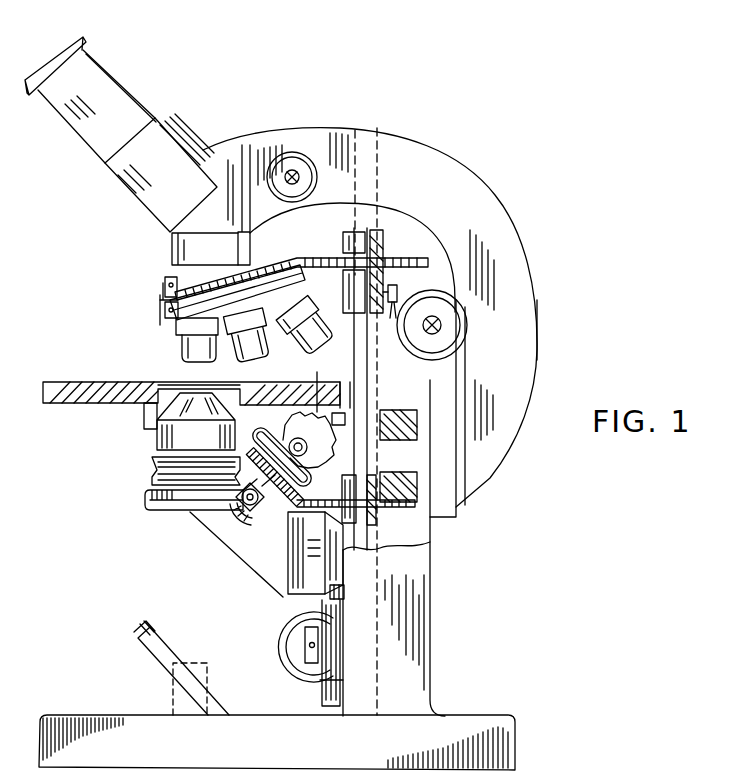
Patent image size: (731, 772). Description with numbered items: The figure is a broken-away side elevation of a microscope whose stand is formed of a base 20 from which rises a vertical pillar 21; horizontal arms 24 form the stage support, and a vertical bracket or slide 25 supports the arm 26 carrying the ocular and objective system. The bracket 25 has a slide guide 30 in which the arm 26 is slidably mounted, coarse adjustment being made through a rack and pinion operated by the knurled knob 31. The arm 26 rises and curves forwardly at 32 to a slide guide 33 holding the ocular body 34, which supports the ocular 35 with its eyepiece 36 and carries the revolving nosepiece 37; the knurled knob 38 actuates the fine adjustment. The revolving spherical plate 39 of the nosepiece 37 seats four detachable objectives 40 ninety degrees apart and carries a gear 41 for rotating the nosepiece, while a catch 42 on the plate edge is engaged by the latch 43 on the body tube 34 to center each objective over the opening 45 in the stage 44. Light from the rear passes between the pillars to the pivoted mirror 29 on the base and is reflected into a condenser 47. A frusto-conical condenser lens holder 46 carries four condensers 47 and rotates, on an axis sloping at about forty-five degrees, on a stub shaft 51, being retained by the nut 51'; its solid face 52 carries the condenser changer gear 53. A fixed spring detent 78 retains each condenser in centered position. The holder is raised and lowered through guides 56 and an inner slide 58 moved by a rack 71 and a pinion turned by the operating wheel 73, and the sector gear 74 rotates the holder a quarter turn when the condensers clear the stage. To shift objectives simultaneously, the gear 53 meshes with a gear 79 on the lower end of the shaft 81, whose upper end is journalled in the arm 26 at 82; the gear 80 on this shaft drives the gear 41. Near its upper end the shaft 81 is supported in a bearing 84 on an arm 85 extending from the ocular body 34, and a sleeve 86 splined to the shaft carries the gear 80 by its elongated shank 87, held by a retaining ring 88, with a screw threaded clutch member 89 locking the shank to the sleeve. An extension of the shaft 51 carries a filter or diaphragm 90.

The base 20 is at (503, 747).
The vertical pillar 21 is at (408, 658).
The horizontal arms 24 is at (143, 427).
The vertical bracket or slide 25 is at (443, 515).
The arm 26 is at (522, 333).
The mirror 29 is at (165, 652).
The slide guide 30 is at (462, 488).
The knurled knob 31 is at (458, 305).
The forwardly curving portion of the arm 32 is at (457, 161).
The slide guide 33 is at (243, 143).
The ocular body 34 is at (190, 240).
The ocular 35 is at (160, 130).
The eyepiece 36 is at (70, 41).
The revolving nosepiece or objective lens holder 37 is at (145, 321).
The knurled knob 38 is at (297, 162).
The revolving spherical plate 39 is at (175, 312).
The objectives 40 is at (190, 343).
The gear 41 is at (162, 301).
The catch 42 is at (168, 313).
The latch 43 is at (165, 283).
The stage 44 is at (45, 387).
The stage opening 45 is at (153, 395).
The condenser lens holder 46 is at (197, 540).
The condensers 47 is at (297, 580).
The stub shaft 51 is at (232, 534).
The nut 51' is at (174, 507).
The solid face 52 is at (280, 535).
The condenser changer gear 53 is at (152, 462).
The guides 56 is at (340, 592).
The inner slide 58 is at (325, 672).
The rack 71 is at (330, 650).
The operating wheel 73 is at (287, 663).
The sector gear 74 is at (333, 385).
The fixed spring detent 78 is at (260, 423).
The gear 79 is at (402, 516).
The gear 80 is at (427, 257).
The shaft 81 is at (362, 378).
The journal in the arm 82 is at (383, 120).
The bearing 84 is at (347, 245).
The arm 85 is at (283, 245).
The sleeve 86 is at (387, 248).
The elongated shank 87 is at (397, 300).
The retaining ring 88 is at (340, 310).
The adjustable screw threaded clutch member 89 is at (392, 310).
The filter or diaphragm 90 is at (158, 510).